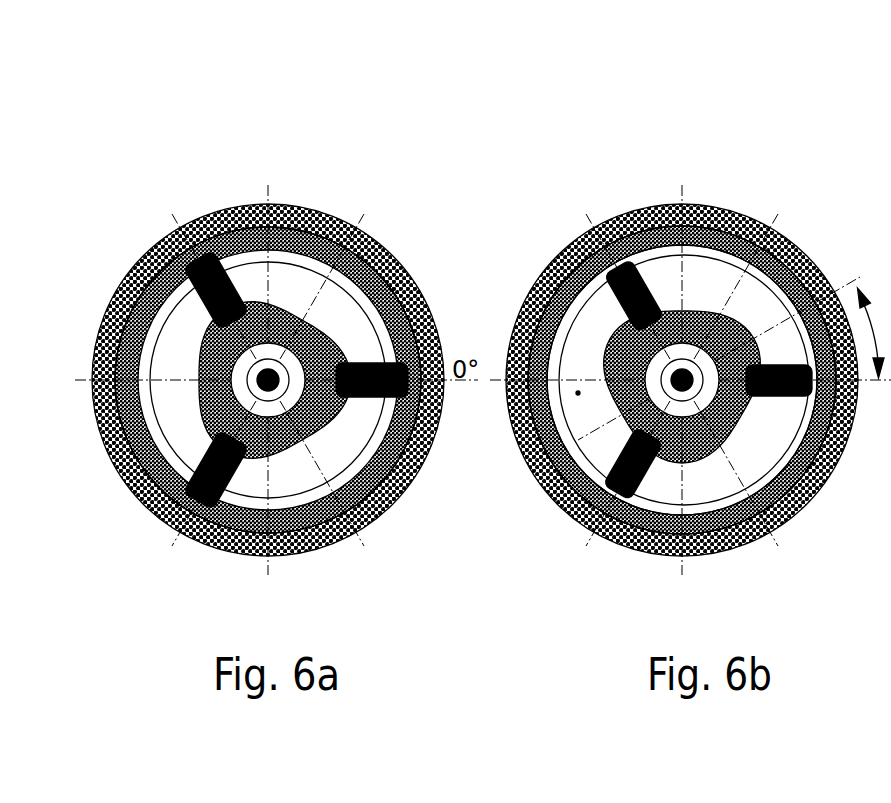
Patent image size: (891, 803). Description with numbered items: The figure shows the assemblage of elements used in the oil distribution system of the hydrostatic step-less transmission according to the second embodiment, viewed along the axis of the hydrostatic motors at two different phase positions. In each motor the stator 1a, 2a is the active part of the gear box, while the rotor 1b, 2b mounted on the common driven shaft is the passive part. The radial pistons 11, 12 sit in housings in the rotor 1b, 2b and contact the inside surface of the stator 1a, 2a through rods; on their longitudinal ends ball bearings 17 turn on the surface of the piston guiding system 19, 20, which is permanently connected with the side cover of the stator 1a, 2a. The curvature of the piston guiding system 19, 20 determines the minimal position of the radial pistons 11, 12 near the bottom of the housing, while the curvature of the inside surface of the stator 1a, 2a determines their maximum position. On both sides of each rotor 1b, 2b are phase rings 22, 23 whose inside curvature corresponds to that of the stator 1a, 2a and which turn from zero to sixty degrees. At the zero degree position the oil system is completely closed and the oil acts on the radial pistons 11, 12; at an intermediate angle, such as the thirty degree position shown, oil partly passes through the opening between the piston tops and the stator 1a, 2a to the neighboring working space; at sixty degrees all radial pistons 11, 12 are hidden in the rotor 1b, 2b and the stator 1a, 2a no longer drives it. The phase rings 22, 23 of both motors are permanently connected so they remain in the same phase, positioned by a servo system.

In FIG. 6a, the stator 1a is at (125, 277).
In FIG. 6a, the stator 2a is at (261, 291).
In FIG. 6b, the rotor 1b is at (710, 282).
In FIG. 6b, the rotor 2b is at (734, 292).
In FIG. 6a, the radial piston 11 is at (222, 210).
In FIG. 6b, the radial piston 11 is at (667, 203).
In FIG. 6a, the radial piston 12 is at (268, 285).
In FIG. 6b, the radial piston 12 is at (682, 287).
In FIG. 6b, the ball bearing 17 is at (856, 464).
In FIG. 6a, the piston guiding system 19 is at (270, 457).
In FIG. 6b, the piston guiding system 19 is at (682, 387).
In FIG. 6a, the piston guiding system 20 is at (269, 441).
In FIG. 6b, the piston guiding system 20 is at (707, 379).
In FIG. 6a, the phase ring 22 is at (358, 230).
In FIG. 6b, the phase ring 22 is at (650, 535).
In FIG. 6a, the phase ring 23 is at (352, 267).
In FIG. 6b, the phase ring 23 is at (665, 440).